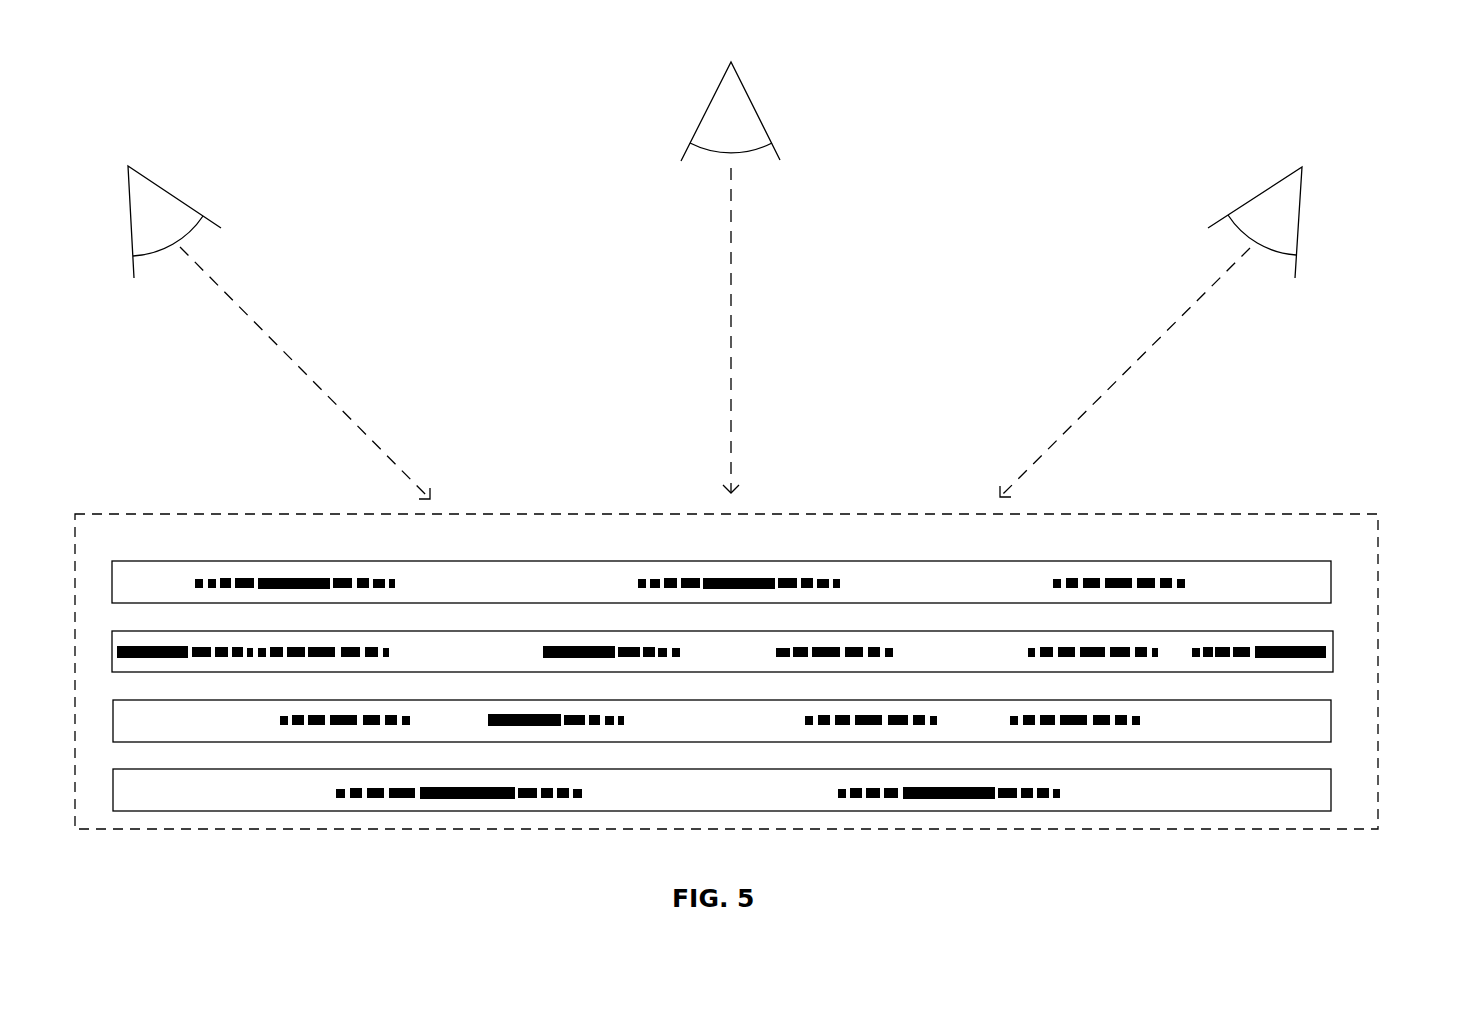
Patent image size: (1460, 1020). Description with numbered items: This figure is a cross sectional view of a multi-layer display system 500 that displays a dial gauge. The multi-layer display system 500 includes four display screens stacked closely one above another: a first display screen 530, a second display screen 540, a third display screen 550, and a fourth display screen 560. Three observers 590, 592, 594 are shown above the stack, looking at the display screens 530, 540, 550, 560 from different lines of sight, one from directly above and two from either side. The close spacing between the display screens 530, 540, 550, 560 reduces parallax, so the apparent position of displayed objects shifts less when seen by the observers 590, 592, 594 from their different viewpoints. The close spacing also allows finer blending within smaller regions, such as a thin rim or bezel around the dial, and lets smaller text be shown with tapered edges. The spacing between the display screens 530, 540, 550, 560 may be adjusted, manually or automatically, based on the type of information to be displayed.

The multi-layer display system 500 is at (229, 440).
The first display screen 530 is at (1331, 578).
The second display screen 540 is at (1333, 656).
The third display screen 550 is at (1331, 716).
The fourth display screen 560 is at (1331, 790).
The observer 590 is at (705, 110).
The observer 592 is at (158, 185).
The observer 594 is at (1273, 185).